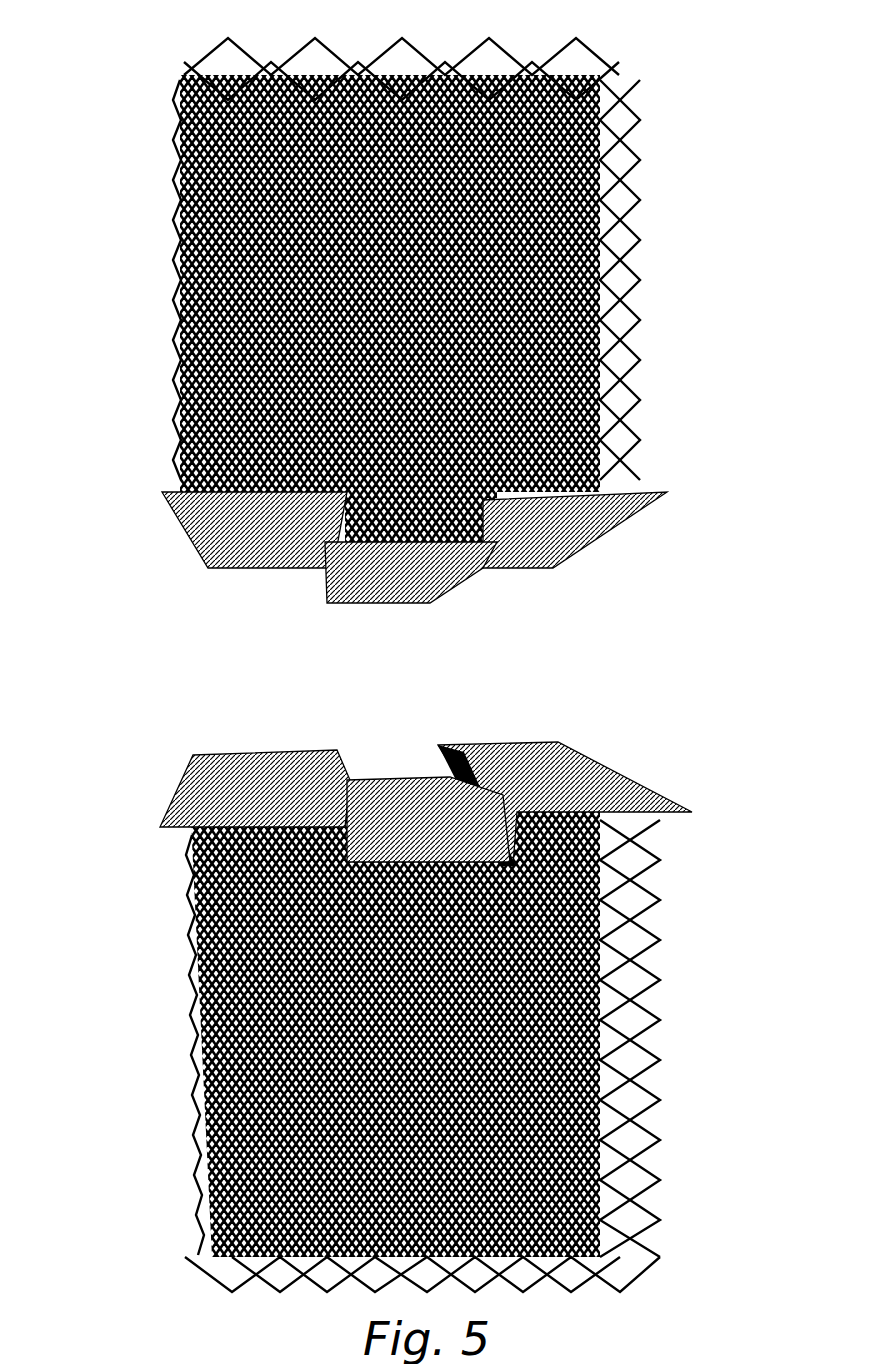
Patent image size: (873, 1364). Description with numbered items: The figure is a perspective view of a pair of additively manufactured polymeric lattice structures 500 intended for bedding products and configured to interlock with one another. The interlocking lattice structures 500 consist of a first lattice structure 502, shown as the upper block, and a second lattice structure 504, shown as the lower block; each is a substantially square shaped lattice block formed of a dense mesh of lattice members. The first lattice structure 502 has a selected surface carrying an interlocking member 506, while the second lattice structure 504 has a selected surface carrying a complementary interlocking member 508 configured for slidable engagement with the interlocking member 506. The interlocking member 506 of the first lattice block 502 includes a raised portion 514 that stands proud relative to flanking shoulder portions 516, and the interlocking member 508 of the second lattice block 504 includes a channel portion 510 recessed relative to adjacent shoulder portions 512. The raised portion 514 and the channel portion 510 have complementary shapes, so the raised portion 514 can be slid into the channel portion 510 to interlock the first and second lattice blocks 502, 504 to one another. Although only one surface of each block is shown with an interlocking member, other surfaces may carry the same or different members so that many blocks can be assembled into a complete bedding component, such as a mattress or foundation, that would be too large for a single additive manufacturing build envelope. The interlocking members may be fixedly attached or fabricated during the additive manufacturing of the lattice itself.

The interlocking lattice structures 500 is at (134, 50).
The first lattice structure 502 is at (712, 30).
The second lattice structure 504 is at (713, 720).
The interlocking member 506 is at (166, 554).
The complementary interlocking member 508 is at (168, 748).
The channel portion 510 is at (391, 758).
The shoulder portions 512 is at (277, 777).
The raised portion 514 is at (383, 587).
The shoulder portions 516 is at (275, 550).